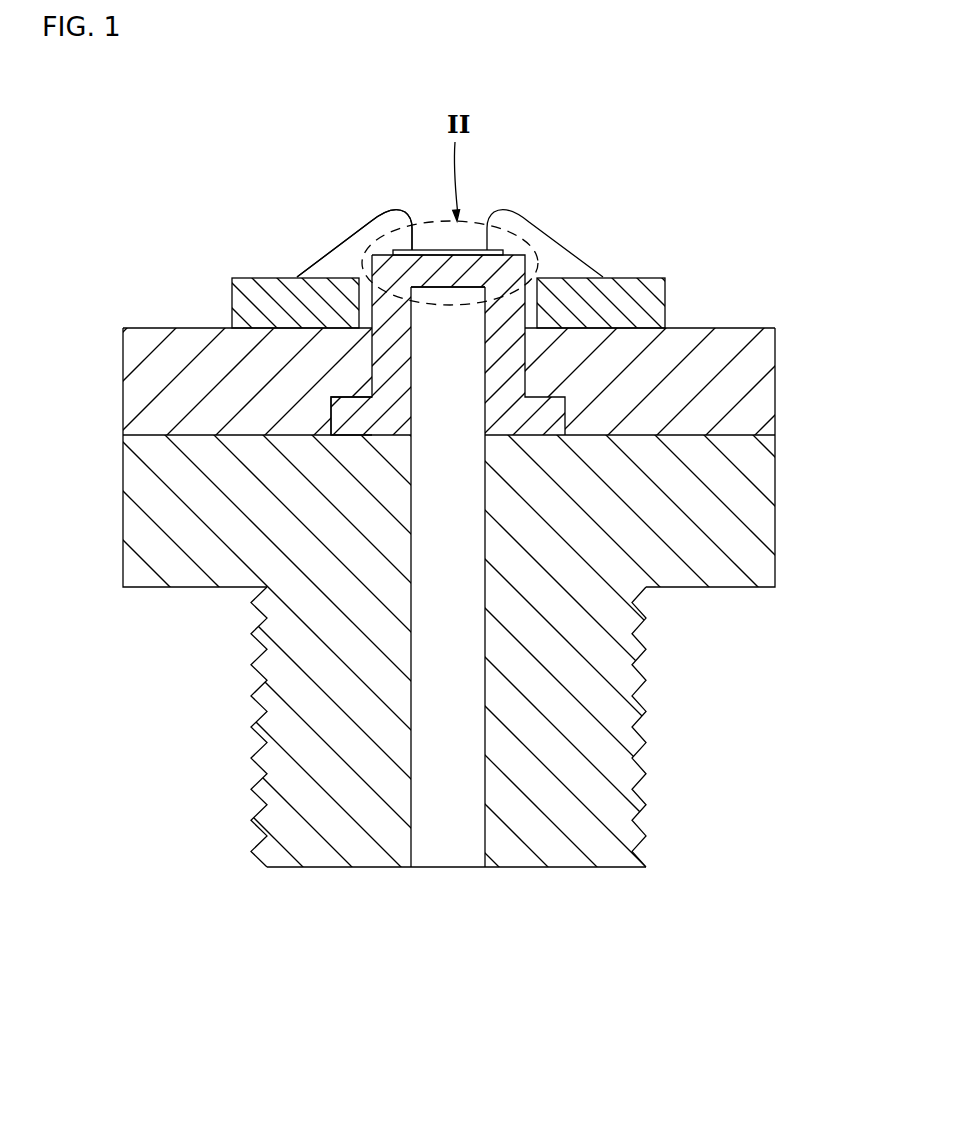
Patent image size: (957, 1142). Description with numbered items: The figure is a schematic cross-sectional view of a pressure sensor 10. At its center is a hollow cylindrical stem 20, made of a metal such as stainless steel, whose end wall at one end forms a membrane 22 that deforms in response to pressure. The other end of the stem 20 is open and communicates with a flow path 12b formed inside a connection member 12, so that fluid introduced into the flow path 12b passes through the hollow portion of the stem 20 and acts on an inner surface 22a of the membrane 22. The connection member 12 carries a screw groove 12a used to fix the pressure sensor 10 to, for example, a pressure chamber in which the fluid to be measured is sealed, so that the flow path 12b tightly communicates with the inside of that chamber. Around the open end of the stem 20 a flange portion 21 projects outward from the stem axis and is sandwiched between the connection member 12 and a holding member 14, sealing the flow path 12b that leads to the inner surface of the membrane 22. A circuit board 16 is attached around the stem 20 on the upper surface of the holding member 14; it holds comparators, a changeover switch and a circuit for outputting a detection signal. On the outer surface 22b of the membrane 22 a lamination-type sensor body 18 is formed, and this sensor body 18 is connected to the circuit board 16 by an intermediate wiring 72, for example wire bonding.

The pressure sensor 10 is at (721, 242).
The connection member 12 is at (762, 523).
The screw groove 12a is at (642, 730).
The flow path 12b is at (484, 833).
The holding member 14 is at (762, 355).
The circuit board 16 is at (630, 290).
The lamination-type sensor body 18 is at (412, 222).
The stem 20 is at (543, 264).
The flange portion 21 is at (350, 412).
The membrane 22 is at (431, 249).
The inner surface 22a is at (448, 290).
The outer surface 22b is at (468, 258).
The intermediate wiring 72 is at (348, 234).